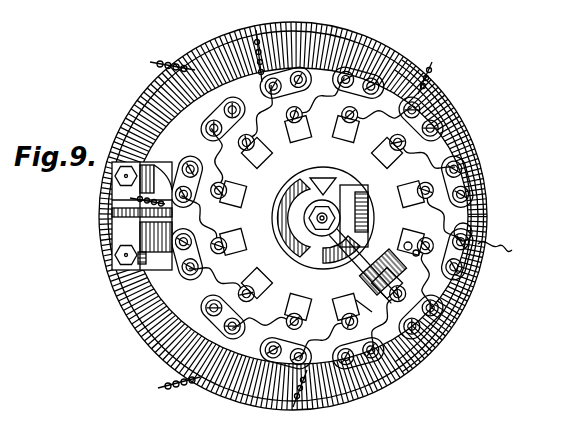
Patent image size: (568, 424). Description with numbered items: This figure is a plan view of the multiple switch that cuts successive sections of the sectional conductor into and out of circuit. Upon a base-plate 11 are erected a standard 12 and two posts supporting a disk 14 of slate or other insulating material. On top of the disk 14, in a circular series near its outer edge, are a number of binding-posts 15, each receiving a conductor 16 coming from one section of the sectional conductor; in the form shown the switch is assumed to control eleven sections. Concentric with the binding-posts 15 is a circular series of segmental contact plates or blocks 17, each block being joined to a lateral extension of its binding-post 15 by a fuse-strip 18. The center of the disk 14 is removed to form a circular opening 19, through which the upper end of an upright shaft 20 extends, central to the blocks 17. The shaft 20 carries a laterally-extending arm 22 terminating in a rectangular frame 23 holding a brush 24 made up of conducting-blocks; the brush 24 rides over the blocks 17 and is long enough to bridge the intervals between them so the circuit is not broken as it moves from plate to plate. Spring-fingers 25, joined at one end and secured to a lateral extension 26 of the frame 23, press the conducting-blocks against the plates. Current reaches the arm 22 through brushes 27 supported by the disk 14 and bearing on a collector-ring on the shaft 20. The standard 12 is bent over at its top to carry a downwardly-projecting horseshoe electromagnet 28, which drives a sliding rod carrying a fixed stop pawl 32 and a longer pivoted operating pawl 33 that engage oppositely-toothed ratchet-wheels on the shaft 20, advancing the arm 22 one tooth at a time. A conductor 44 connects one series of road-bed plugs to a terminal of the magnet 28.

The base-plate 11 is at (112, 243).
The standard 12 is at (128, 201).
The disk 14 is at (463, 293).
The binding-posts 15 is at (150, 292).
The conductor 16 is at (338, 76).
The segmental contact plates or blocks 17 is at (322, 218).
The fuse-strip 18 is at (319, 210).
The circular opening 19 is at (356, 216).
The upright shaft 20 is at (368, 208).
The laterally-extending arm 22 is at (363, 266).
The rectangular frame 23 is at (368, 272).
The brush 24 is at (371, 315).
The spring-fingers 25 is at (420, 268).
The lateral extension of frame 26 is at (455, 231).
The brushes 27 is at (326, 178).
The electromagnet 28 is at (160, 132).
The fixed pawl 32 is at (291, 197).
The pivoted pawl 33 is at (292, 250).
The conductor 44 is at (161, 58).